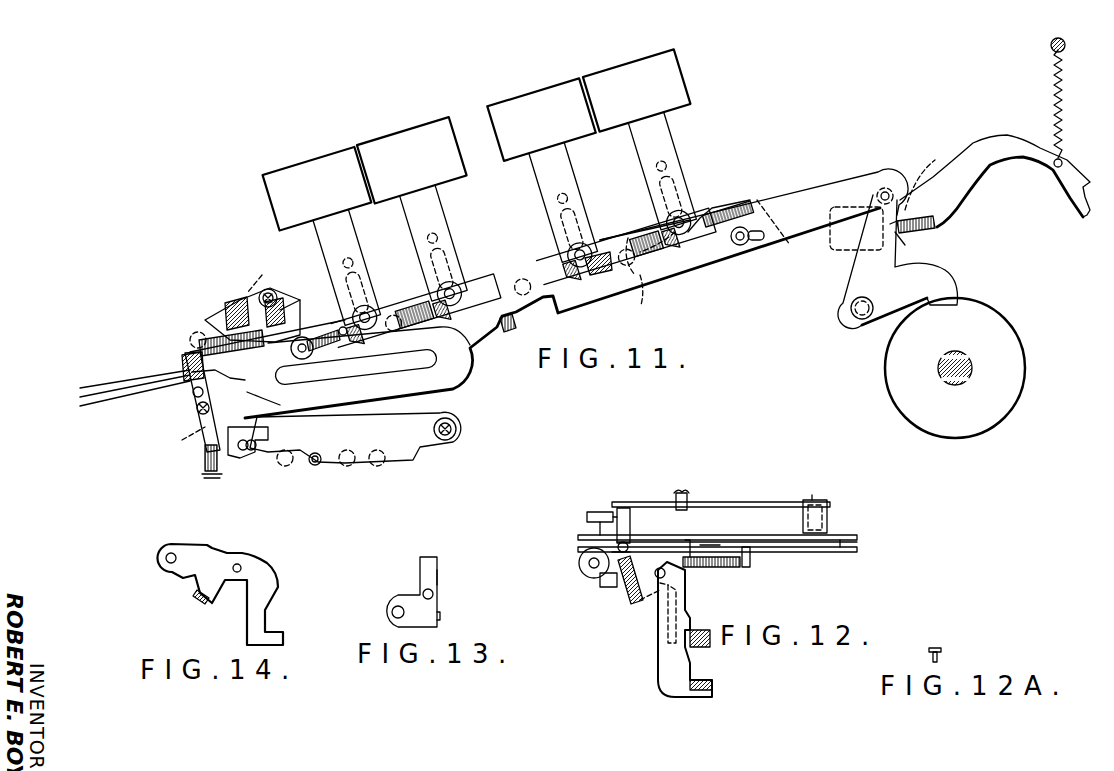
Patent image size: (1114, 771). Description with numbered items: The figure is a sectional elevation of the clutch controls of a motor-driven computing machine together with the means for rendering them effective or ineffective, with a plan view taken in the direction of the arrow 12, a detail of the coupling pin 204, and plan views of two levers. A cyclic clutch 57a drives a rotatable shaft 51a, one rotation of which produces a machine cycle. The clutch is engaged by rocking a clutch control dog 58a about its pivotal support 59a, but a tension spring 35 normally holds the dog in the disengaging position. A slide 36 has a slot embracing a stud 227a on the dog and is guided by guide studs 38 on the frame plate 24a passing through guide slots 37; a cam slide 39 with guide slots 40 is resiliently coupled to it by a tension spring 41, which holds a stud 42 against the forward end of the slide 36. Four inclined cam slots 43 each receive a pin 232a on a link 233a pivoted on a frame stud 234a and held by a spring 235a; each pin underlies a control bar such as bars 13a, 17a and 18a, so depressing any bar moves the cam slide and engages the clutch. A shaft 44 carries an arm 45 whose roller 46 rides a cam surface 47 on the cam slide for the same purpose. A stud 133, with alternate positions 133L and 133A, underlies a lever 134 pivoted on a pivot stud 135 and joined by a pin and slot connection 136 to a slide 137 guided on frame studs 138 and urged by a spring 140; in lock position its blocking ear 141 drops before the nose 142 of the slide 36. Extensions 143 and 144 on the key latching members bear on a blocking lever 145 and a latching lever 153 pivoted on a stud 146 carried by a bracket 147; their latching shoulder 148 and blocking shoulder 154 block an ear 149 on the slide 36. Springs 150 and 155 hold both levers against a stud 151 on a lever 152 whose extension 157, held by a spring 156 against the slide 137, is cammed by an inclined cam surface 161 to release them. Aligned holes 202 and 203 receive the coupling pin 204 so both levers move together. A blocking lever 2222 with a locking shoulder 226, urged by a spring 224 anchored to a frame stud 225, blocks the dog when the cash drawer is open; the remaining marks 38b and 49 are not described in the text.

In FIG. 11, the control bar 13a is at (326, 170).
In FIG. 11, the control bar 18a is at (540, 80).
In FIG. 11, the control bar 17a is at (635, 53).
In FIG. 11, the arrow 12 is at (228, 270).
In FIG. 11, the slide 36 is at (814, 196).
In FIG. 12, the slide 36 is at (843, 554).
In FIG. 11, the locking shoulder 226 is at (895, 197).
In FIG. 11, the stud 227a is at (908, 170).
In FIG. 11, the clutch control dog 58a is at (850, 302).
In FIG. 11, the pivotal support 59a is at (848, 322).
In FIG. 11, the tension spring 35 is at (912, 247).
In FIG. 11, the blocking lever 2222 is at (982, 190).
In FIG. 11, the spring 224 is at (1062, 130).
In FIG. 11, the frame stud 225 is at (1062, 43).
In FIG. 11, the cyclic clutch 57a is at (878, 380).
In FIG. 11, the rotatable shaft 51a is at (966, 366).
In FIG. 11, the guide slots 37 is at (760, 247).
In FIG. 11, the cam slide 39 is at (728, 208).
In FIG. 12, the cam slide 39 is at (840, 552).
In FIG. 11, the guide slots 40 is at (760, 205).
In FIG. 11, the spring 235a is at (700, 190).
In FIG. 11, the guide studs 38 is at (738, 246).
In FIG. 12, the guide studs 38 is at (705, 545).
In FIG. 11, the inclined cam slots 43 is at (675, 265).
In FIG. 11, the link 233a is at (632, 230).
In FIG. 11, the pin 232a is at (675, 232).
In FIG. 11, the frame stud 234a is at (638, 287).
In FIG. 11, the stud 42 is at (280, 365).
In FIG. 11, the lever 134 is at (438, 452).
In FIG. 12, the lever 134 is at (765, 490).
In FIG. 11, the pivot stud 135 is at (458, 429).
In FIG. 12, the pivot stud 135 is at (812, 495).
In FIG. 11, the alternate position of stud 133L is at (290, 468).
In FIG. 11, the stud 133 is at (316, 466).
In FIG. 12, the stud 133 is at (688, 500).
In FIG. 11, the alternate position of stud 133A is at (372, 466).
In FIG. 11, the pin and slot connection 136 is at (250, 460).
In FIG. 11, the slide 137 is at (235, 460).
In FIG. 12, the slide 137 is at (595, 518).
In FIG. 11, the frame studs 138 is at (185, 354).
In FIG. 12, the frame studs 138 is at (600, 512).
In FIG. 11, the blocking ear 141 is at (198, 409).
In FIG. 11, the spring 140 is at (205, 478).
In FIG. 11, the stud 146 is at (198, 352).
In FIG. 12, the stud 146 is at (583, 562).
In FIG. 11, the tension spring 41 is at (312, 330).
In FIG. 12, the tension spring 41 is at (747, 567).
In FIG. 11, the frame plate 24a is at (215, 340).
In FIG. 12, the frame plate 24a is at (850, 535).
In FIG. 11, the pin 38b is at (303, 337).
In FIG. 11, the inclined cam surface 161 is at (342, 337).
In FIG. 11, the shaft 44 is at (238, 318).
In FIG. 11, the roller 46 is at (272, 292).
In FIG. 11, the arm 45 is at (250, 288).
In FIG. 11, the cam surface 47 is at (282, 310).
In FIG. 11, the block 49 is at (280, 318).
In FIG. 11, the stud 151 is at (190, 342).
In FIG. 12, the stud 151 is at (615, 540).
In FIG. 13, the stud 151 is at (434, 594).
In FIG. 11, the blocking lever 145 is at (135, 379).
In FIG. 12, the blocking lever 145 is at (664, 620).
In FIG. 14, the blocking lever 145 is at (278, 583).
In FIG. 11, the latching lever 153 is at (135, 389).
In FIG. 12, the latching lever 153 is at (660, 650).
In FIG. 11, the lever 152 is at (135, 399).
In FIG. 12, the lever 152 is at (600, 552).
In FIG. 13, the lever 152 is at (453, 581).
In FIG. 11, the bracket 147 is at (195, 378).
In FIG. 11, the nose 142 is at (282, 405).
In FIG. 12, the extension 157 is at (628, 518).
In FIG. 13, the extension 157 is at (437, 558).
In FIG. 12, the spring 150 is at (600, 580).
In FIG. 12, the spring 155 is at (622, 594).
In FIG. 12, the hole 203 is at (650, 610).
In FIG. 12, the spring 156 is at (661, 567).
In FIG. 12, the ear 149 is at (690, 540).
In FIG. 12, the blocking shoulder 154 is at (713, 567).
In FIG. 12, the extension 143 is at (705, 632).
In FIG. 12, the extension 144 is at (708, 682).
In FIG. 12A, the coupling pin 204 is at (942, 652).
In FIG. 14, the hole 202 is at (238, 563).
In FIG. 14, the latching shoulder 148 is at (248, 555).